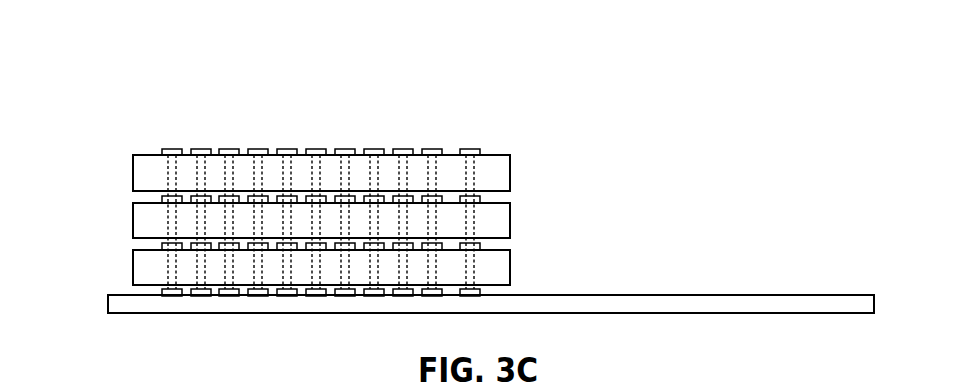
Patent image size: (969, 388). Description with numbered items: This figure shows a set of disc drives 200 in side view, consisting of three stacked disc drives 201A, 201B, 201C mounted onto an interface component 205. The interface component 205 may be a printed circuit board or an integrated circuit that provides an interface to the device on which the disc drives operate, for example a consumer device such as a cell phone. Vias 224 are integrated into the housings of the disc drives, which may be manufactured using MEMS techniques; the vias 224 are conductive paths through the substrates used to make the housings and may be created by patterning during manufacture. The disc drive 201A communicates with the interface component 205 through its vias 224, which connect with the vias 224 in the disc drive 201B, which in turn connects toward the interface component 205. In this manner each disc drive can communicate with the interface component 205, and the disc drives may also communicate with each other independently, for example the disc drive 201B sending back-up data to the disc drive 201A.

The set of disc drives 200 is at (98, 96).
The disc drive 201A is at (133, 182).
The disc drive 201B is at (133, 232).
The disc drive 201C is at (133, 277).
The interface component 205 is at (602, 303).
The vias 224 is at (470, 149).